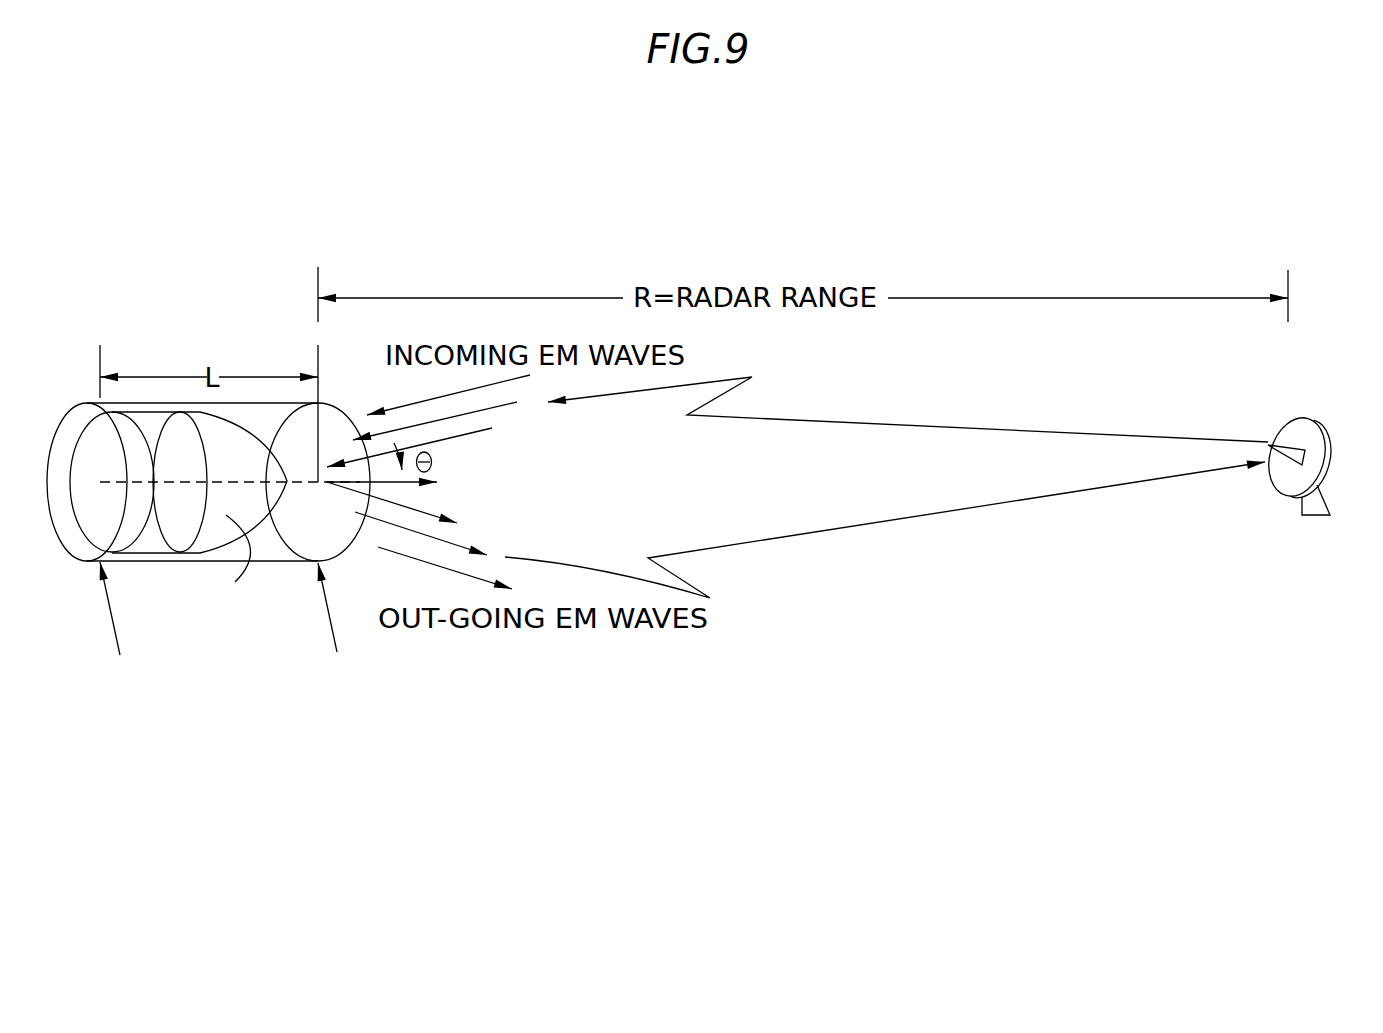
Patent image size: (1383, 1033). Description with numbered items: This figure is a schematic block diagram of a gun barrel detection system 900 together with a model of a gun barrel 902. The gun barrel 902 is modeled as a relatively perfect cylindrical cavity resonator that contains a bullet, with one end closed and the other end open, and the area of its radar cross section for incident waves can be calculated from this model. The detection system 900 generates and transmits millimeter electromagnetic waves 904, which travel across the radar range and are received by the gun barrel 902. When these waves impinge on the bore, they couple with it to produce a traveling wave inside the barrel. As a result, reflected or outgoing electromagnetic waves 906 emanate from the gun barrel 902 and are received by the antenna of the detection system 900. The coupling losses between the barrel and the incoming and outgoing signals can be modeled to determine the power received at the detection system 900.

The gun barrel detection system 900 is at (1320, 413).
The gun barrel 902 is at (225, 210).
The millimeter electromagnetic waves 904 is at (832, 420).
The reflected or outgoing electromagnetic waves 906 is at (793, 538).